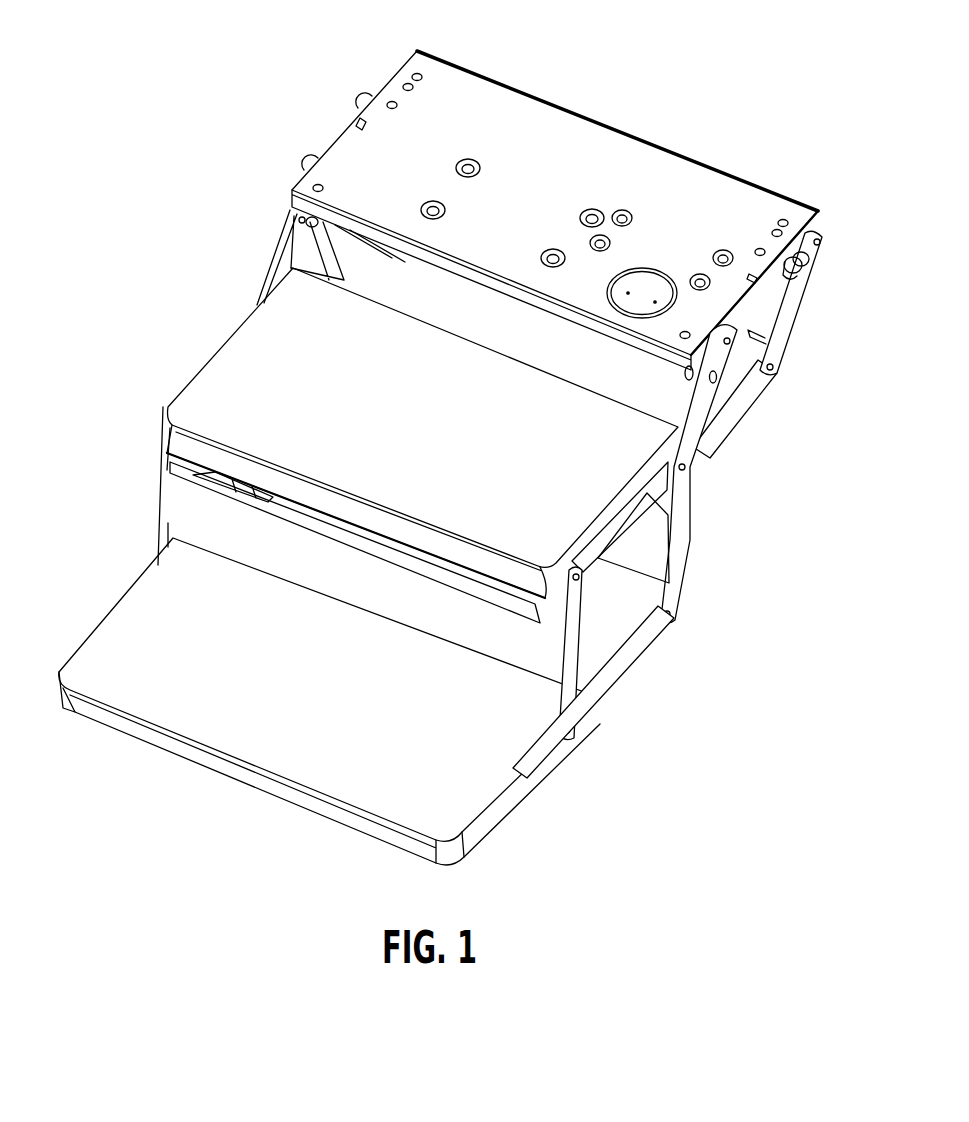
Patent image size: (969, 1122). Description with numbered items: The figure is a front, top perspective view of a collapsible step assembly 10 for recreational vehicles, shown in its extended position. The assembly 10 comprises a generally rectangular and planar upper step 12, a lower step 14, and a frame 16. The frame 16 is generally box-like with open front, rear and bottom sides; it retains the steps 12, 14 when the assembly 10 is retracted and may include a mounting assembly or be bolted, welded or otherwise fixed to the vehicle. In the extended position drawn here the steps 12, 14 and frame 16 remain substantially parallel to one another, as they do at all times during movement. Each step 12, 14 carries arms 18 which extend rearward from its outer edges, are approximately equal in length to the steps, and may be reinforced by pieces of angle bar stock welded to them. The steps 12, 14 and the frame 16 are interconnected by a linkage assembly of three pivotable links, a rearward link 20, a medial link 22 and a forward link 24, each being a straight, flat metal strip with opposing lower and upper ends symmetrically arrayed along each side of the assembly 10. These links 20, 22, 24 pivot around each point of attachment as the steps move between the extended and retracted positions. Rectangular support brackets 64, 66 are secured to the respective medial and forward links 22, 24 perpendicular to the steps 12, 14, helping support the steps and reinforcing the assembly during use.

The collapsible step assembly 10 is at (209, 102).
The upper step 12 is at (223, 358).
The lower step 14 is at (121, 615).
The frame 16 is at (820, 221).
The arms 18 is at (343, 260).
The rearward link 20 is at (803, 295).
The medial link 22 is at (700, 515).
The forward link 24 is at (573, 667).
The rectangular support bracket 64 is at (650, 550).
The rectangular support bracket 66 is at (540, 667).